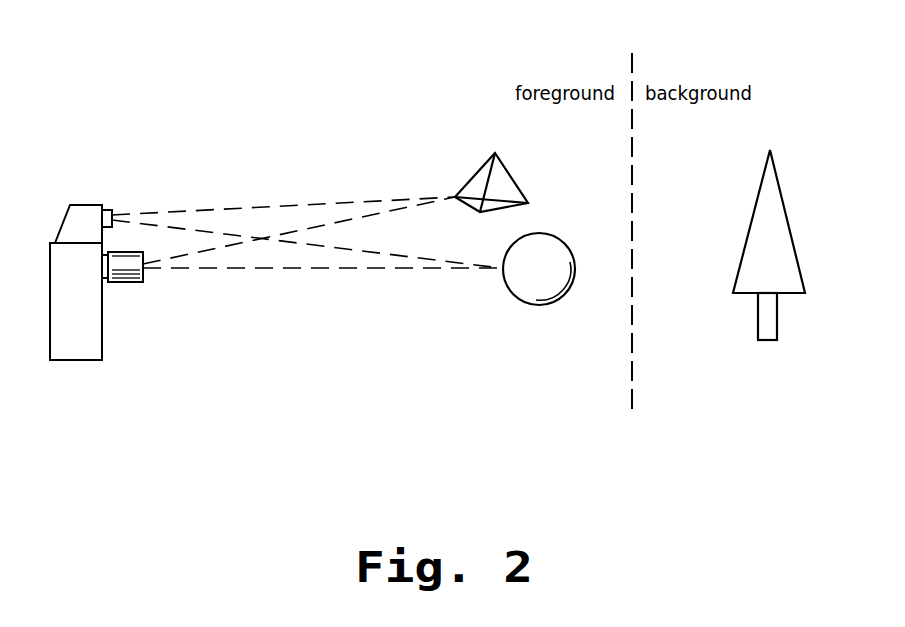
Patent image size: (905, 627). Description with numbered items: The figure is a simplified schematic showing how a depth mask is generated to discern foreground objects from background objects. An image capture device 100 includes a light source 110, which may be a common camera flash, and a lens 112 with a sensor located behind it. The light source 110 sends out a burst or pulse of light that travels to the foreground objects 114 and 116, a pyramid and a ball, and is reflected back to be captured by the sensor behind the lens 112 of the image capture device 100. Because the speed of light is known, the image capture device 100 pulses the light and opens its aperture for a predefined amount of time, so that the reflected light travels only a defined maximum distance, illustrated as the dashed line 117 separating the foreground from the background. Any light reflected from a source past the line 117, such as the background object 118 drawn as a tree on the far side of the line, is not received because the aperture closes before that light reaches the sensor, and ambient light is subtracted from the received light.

The image capture device 100 is at (68, 360).
The light source 110 is at (87, 205).
The lens 112 is at (138, 282).
The foreground object 114 is at (483, 162).
The foreground object 116 is at (523, 295).
The line 117 is at (630, 418).
The background object (tree) 118 is at (778, 177).